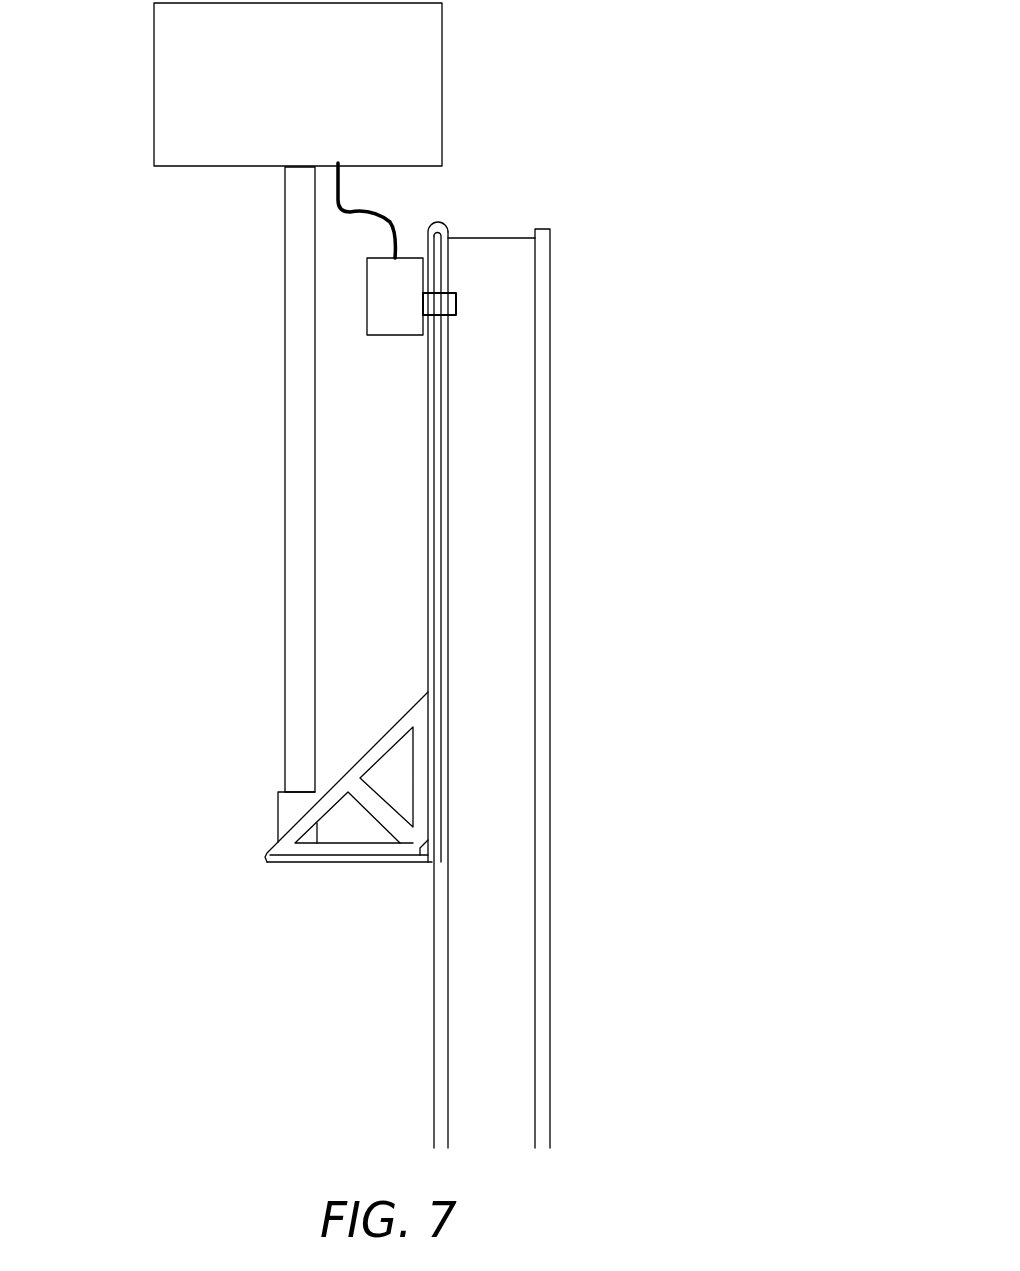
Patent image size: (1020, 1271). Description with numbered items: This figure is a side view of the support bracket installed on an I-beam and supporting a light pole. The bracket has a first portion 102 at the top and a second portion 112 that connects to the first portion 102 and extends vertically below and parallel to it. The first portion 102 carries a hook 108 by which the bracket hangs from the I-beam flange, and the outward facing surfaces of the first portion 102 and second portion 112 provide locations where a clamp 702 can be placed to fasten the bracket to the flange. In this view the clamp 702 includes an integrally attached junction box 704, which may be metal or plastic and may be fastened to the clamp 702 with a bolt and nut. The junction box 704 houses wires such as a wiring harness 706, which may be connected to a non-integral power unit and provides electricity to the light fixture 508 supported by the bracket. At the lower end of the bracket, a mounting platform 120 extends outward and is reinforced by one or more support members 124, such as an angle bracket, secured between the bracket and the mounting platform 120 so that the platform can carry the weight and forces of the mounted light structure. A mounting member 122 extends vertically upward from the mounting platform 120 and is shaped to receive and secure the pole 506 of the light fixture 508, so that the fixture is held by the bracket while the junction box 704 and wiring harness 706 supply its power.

The light fixture 508 is at (715, 98).
The pole 506 is at (287, 475).
The first portion 102 is at (479, 292).
The hook 108 is at (470, 222).
The second portion 112 is at (398, 543).
The clamp 702 is at (447, 305).
The junction box 704 is at (400, 317).
The wiring harness 706 is at (353, 242).
The mounting member 122 is at (288, 803).
The mounting platform 120 is at (287, 863).
The support member 124 is at (372, 852).